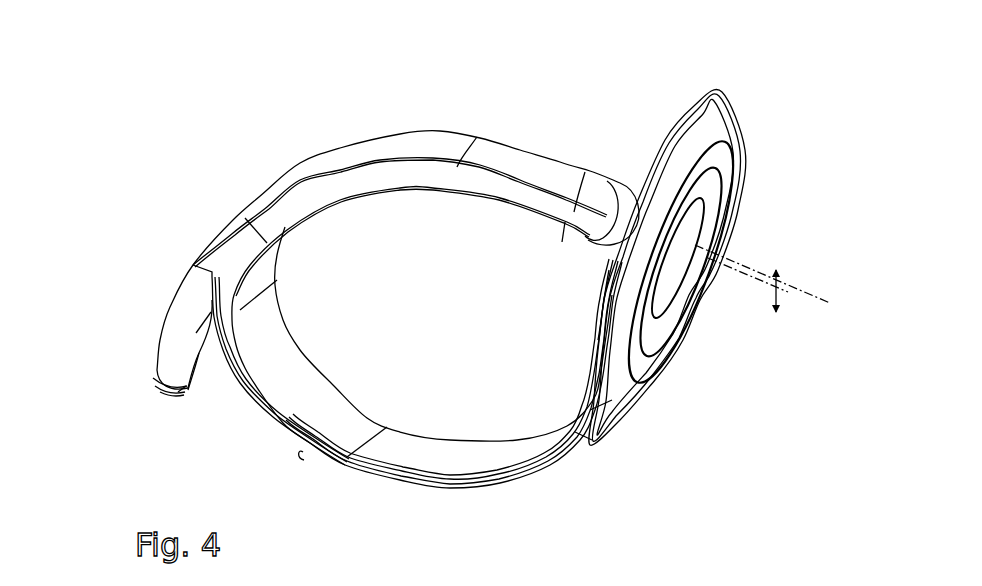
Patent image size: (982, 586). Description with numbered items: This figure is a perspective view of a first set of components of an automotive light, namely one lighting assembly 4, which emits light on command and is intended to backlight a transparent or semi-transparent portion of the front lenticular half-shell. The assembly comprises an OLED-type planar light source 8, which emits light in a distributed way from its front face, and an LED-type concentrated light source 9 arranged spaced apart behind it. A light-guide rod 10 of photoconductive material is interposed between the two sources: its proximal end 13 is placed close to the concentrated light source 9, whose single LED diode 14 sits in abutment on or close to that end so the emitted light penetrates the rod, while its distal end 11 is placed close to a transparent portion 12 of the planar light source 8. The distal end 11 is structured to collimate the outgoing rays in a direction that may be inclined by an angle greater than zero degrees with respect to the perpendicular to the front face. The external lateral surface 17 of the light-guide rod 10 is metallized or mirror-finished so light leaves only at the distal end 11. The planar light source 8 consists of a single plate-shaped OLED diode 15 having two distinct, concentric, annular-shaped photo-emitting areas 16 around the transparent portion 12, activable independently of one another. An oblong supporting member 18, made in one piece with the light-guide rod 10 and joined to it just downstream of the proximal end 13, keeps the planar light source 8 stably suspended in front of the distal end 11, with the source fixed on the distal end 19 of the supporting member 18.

The lighting assembly 4 is at (245, 163).
The planar light source 8 is at (743, 108).
The concentrated light source 9 is at (183, 403).
The light-guide rod 10 is at (320, 160).
The distal end 11 is at (624, 196).
The transparent portion 12 is at (693, 229).
The proximal end 13 is at (152, 389).
The LED diode 14 is at (171, 398).
The plate-shaped OLED diode 15 is at (733, 130).
The annular-shaped photo-emitting areas 16 is at (727, 162).
The external lateral surface 17 is at (193, 258).
The supporting member 18 is at (387, 427).
The distal end of the supporting member 19 is at (600, 297).